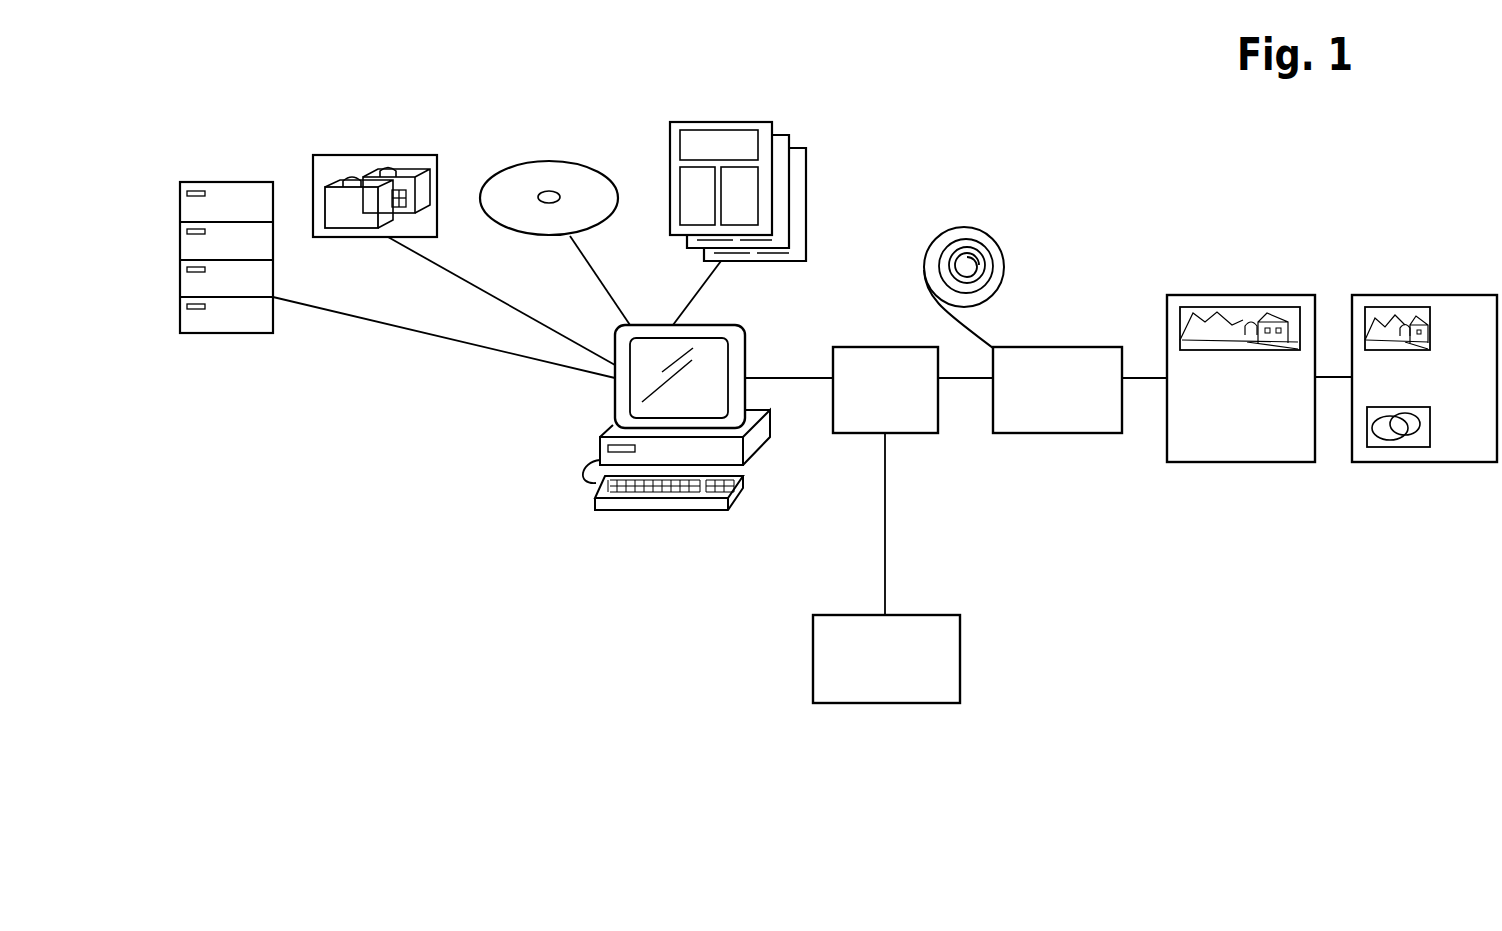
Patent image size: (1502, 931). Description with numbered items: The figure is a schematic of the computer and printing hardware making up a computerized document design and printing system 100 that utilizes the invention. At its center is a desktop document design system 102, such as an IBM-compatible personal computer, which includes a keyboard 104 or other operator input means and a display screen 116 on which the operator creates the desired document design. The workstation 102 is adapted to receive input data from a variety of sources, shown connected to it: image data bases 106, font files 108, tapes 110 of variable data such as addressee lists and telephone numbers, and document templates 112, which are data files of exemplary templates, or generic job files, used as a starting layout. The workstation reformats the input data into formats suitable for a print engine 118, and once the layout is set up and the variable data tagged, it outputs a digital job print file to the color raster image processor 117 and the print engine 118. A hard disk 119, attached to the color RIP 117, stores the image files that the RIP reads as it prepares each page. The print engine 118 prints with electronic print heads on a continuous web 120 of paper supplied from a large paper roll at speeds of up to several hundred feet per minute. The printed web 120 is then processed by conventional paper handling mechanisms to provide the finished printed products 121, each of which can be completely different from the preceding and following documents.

The computerized document design and printing system 100 is at (1040, 206).
The desktop document design system 102 is at (536, 436).
The keyboard 104 is at (646, 510).
The image data bases 106 is at (213, 182).
The font files 108 is at (421, 155).
The tapes of variable data 110 is at (490, 222).
The document templates 112 is at (740, 122).
The display screen 116 is at (725, 326).
The color raster image processor (CRIP) 117 is at (845, 433).
The print engine 118 is at (1055, 433).
The hard disk 119 is at (960, 670).
The web 120 is at (926, 282).
The finished printed products 121 is at (1238, 462).